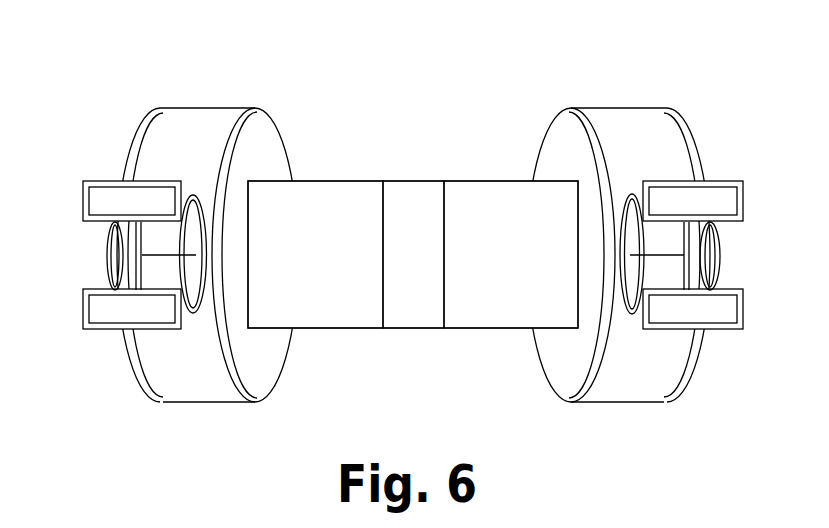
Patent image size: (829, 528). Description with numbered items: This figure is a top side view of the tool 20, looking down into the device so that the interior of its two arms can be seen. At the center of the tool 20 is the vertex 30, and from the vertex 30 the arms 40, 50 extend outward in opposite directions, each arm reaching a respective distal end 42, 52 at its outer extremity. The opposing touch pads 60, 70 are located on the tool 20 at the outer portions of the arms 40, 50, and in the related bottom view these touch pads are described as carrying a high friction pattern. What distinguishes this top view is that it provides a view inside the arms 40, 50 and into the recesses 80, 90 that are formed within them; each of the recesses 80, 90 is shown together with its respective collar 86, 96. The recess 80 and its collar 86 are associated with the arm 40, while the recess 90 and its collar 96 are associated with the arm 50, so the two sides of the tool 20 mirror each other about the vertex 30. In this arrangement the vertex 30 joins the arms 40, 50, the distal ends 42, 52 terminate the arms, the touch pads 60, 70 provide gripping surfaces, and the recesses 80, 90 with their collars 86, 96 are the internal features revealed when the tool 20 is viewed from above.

The tool 20 is at (406, 245).
The vertex 30 is at (414, 315).
The arm 40 is at (326, 198).
The arm 50 is at (498, 200).
The touch pad 60 is at (170, 382).
The touch pad 70 is at (653, 377).
The recess 80 is at (182, 270).
The recess 90 is at (641, 277).
The distal end 42 is at (83, 206).
The distal end 52 is at (730, 203).
The collar 86 is at (133, 257).
The collar 96 is at (698, 237).